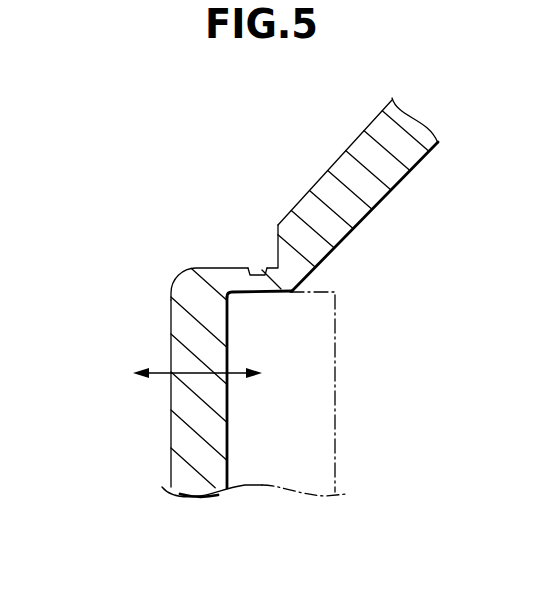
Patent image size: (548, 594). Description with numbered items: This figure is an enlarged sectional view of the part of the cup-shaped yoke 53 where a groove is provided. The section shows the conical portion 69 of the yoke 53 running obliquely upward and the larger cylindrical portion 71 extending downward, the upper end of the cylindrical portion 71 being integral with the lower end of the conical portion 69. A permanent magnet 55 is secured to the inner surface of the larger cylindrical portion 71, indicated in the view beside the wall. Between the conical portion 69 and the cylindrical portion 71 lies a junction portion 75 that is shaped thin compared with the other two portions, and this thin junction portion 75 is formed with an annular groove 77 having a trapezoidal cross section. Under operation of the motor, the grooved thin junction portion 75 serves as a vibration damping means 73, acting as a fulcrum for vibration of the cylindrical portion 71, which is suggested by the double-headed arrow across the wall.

The yoke 53 is at (150, 306).
The permanent magnet 55 is at (313, 413).
The conical portion 69 is at (350, 165).
The larger cylindrical portion 71 is at (185, 413).
The vibration damping means 73 is at (203, 260).
The junction portion 75 is at (257, 282).
The annular groove 77 is at (259, 272).